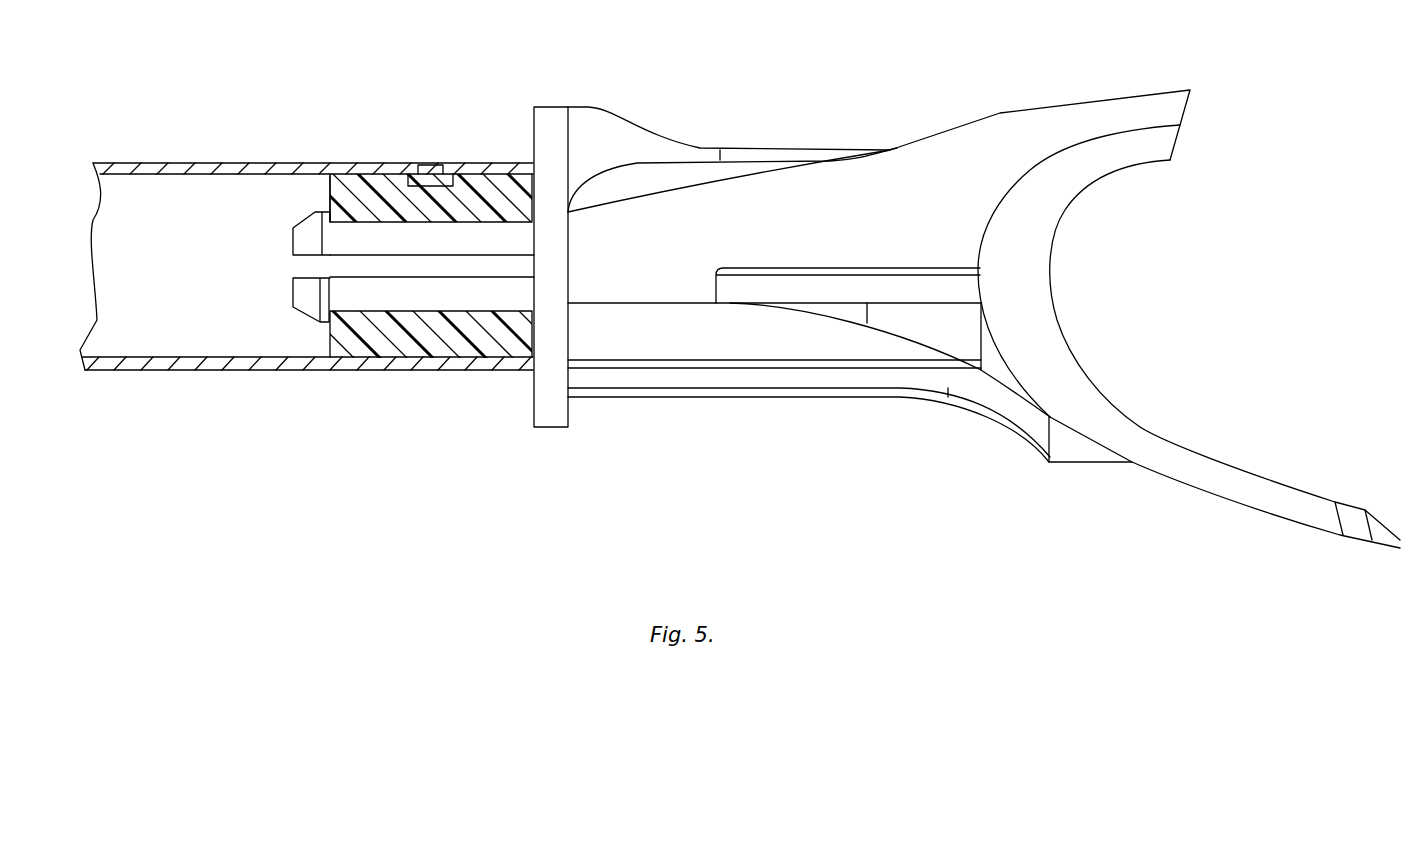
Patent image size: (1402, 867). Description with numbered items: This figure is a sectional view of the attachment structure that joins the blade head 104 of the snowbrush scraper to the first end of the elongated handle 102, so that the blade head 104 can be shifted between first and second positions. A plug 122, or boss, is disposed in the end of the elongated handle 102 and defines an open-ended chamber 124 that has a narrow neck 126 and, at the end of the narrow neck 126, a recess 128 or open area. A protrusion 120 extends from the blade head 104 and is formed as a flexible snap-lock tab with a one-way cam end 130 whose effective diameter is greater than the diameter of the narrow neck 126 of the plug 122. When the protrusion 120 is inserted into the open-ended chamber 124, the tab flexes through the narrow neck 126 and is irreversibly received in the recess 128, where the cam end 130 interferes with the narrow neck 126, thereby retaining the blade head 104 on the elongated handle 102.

The elongated handle 102 is at (233, 148).
The blade head 104 is at (855, 100).
The protrusion 120 is at (428, 297).
The plug 122 is at (366, 192).
The open-ended chamber 124 is at (208, 280).
The narrow neck 126 is at (312, 330).
The recess 128 is at (318, 196).
The one-way cam end 130 is at (311, 221).